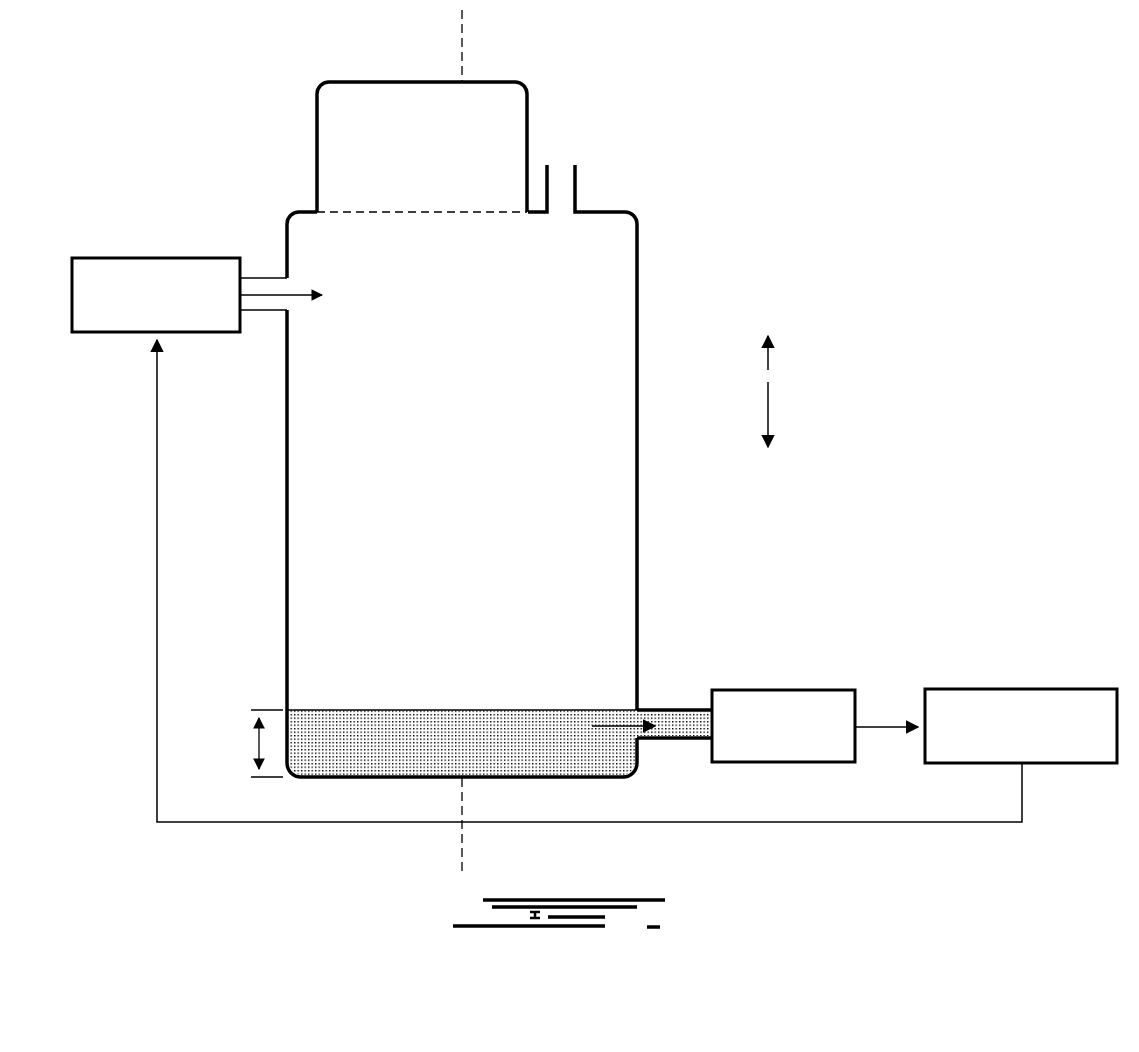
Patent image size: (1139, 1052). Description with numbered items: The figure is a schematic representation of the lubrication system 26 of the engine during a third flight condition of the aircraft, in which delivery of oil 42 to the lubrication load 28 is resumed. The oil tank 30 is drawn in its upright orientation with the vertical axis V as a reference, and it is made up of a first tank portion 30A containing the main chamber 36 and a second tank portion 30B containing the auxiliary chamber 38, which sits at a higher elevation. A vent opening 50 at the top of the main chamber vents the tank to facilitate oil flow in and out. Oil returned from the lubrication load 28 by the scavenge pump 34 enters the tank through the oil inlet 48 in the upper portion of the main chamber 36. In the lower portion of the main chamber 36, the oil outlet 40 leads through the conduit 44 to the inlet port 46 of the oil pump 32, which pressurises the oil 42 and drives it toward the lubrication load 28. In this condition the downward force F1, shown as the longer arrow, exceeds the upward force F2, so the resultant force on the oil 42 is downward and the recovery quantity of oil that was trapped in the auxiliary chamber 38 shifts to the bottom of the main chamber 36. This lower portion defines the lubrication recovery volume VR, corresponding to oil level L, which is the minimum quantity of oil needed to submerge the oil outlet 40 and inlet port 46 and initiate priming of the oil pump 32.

The lubrication system 26 is at (912, 192).
The lubrication load 28 is at (1026, 689).
The oil tank 30 is at (639, 506).
The first tank portion 30A is at (667, 294).
The second tank portion 30B is at (552, 131).
The oil pump 32 is at (784, 762).
The scavenge pump 34 is at (114, 258).
The main chamber 36 is at (313, 520).
The auxiliary chamber 38 is at (358, 143).
The oil outlet 40 is at (636, 734).
The oil 42 is at (475, 754).
The conduit 44 is at (676, 706).
The inlet port 46 is at (708, 728).
The oil inlet 48 is at (287, 293).
The vent opening 50 is at (560, 210).
The vertical axis V is at (465, 47).
The lubrication recovery volume VR is at (312, 735).
The oil level L is at (256, 738).
The downward force F1 is at (770, 413).
The upward force F2 is at (770, 357).